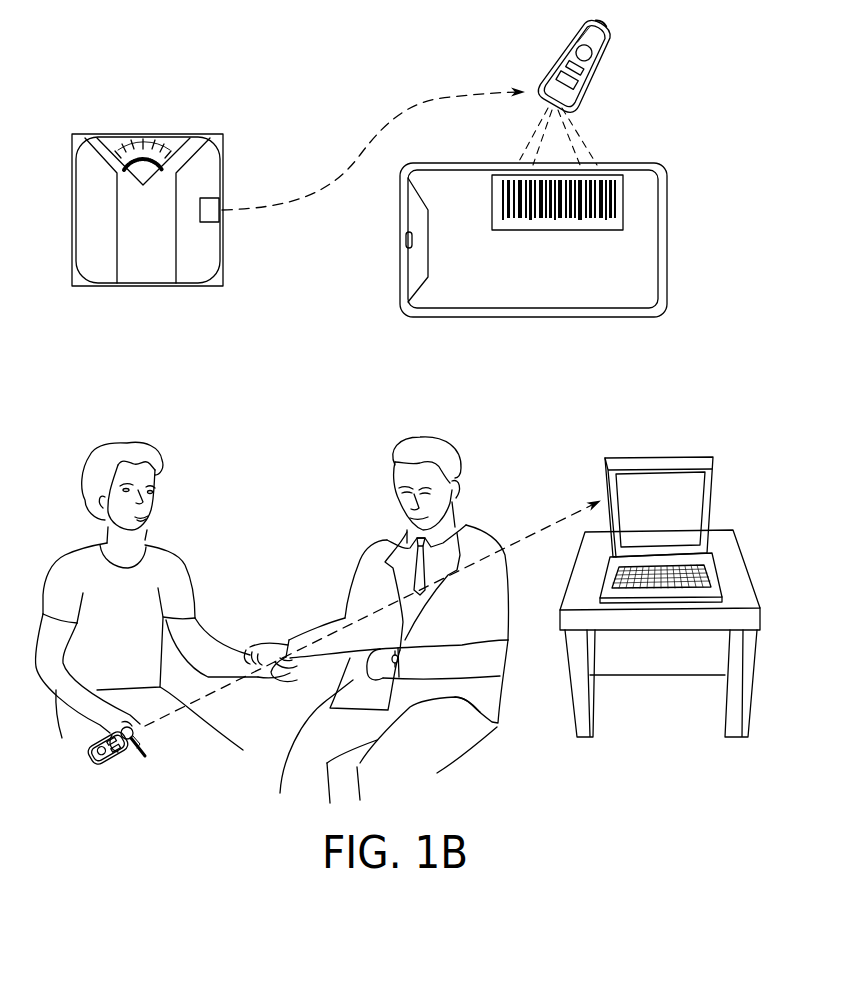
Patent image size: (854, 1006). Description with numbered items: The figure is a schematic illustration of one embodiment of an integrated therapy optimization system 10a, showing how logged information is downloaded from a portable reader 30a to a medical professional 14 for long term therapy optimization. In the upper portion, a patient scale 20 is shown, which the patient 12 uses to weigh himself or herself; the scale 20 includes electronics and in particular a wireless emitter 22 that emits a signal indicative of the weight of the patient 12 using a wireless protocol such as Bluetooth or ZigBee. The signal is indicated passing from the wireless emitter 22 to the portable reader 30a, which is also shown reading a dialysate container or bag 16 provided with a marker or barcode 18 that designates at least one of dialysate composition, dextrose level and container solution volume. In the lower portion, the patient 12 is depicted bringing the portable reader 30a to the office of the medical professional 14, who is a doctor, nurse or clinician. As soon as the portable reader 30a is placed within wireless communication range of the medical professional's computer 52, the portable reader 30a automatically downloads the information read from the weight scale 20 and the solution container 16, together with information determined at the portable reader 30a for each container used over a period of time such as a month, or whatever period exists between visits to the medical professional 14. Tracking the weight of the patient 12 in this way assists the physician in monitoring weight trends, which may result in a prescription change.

The system 10a is at (302, 548).
The patient 12 is at (150, 452).
The medical professional 14 is at (418, 443).
The dialysate container 16 is at (642, 210).
The barcode 18 is at (617, 175).
The patient scale 20 is at (187, 134).
The wireless emitter 22 is at (214, 203).
The portable reader 30a is at (617, 32).
The computer 52 is at (622, 458).